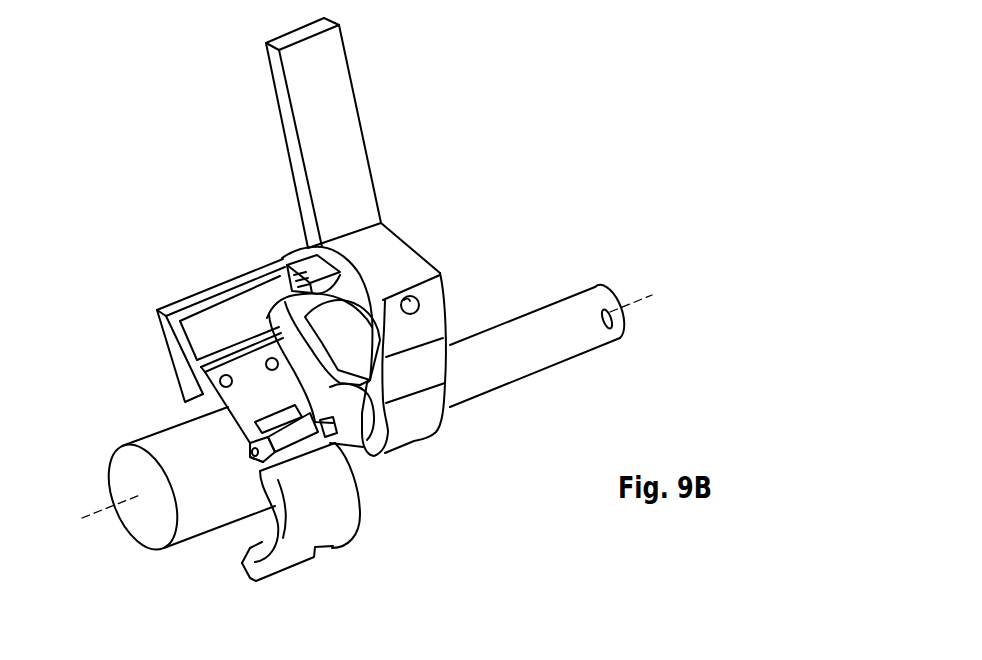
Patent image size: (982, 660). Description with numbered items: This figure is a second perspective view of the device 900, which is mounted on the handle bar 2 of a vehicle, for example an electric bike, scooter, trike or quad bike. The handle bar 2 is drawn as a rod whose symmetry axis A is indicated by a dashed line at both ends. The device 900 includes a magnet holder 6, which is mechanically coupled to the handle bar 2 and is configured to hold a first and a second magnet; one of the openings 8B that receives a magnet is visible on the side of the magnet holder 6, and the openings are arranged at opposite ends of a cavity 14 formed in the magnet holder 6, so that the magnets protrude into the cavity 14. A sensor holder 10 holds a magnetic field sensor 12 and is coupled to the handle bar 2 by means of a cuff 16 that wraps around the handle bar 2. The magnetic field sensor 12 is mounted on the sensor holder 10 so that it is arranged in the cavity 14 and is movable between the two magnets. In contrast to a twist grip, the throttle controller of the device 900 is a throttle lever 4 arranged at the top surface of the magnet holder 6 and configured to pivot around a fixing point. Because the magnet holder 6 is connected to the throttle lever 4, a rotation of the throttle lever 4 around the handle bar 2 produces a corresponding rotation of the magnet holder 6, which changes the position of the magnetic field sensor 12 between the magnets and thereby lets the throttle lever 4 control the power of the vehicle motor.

The device 900 is at (182, 134).
The throttle lever 4 is at (368, 157).
The magnet holder 6 is at (418, 265).
The opening 8B is at (420, 303).
The cavity 14 is at (350, 288).
The magnetic field sensor 12 is at (293, 252).
The sensor holder 10 is at (172, 360).
The handle bar 2 is at (162, 432).
The symmetry axis A is at (366, 406).
The cuff 16 is at (344, 497).